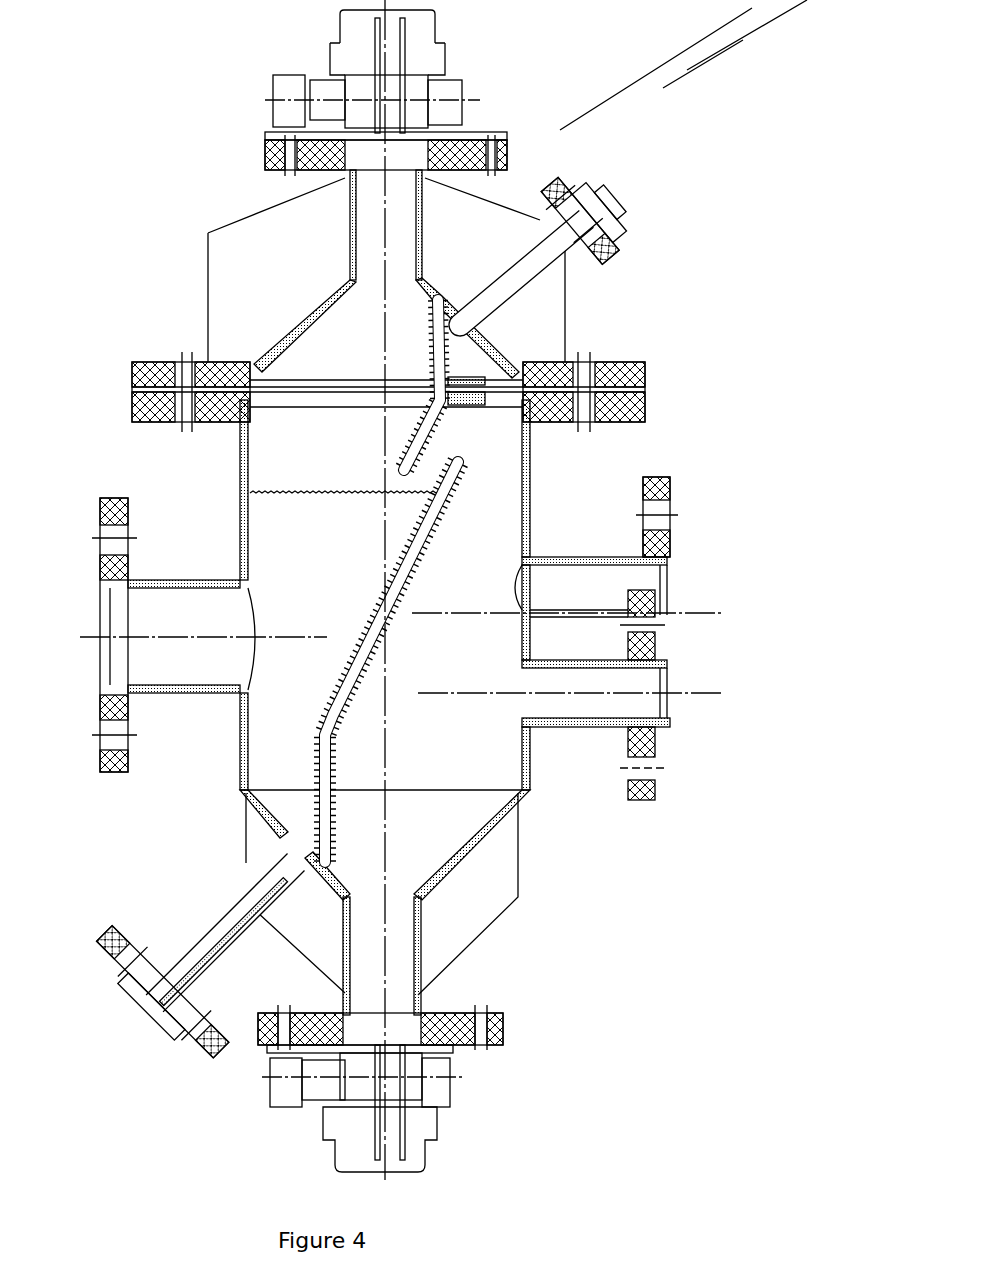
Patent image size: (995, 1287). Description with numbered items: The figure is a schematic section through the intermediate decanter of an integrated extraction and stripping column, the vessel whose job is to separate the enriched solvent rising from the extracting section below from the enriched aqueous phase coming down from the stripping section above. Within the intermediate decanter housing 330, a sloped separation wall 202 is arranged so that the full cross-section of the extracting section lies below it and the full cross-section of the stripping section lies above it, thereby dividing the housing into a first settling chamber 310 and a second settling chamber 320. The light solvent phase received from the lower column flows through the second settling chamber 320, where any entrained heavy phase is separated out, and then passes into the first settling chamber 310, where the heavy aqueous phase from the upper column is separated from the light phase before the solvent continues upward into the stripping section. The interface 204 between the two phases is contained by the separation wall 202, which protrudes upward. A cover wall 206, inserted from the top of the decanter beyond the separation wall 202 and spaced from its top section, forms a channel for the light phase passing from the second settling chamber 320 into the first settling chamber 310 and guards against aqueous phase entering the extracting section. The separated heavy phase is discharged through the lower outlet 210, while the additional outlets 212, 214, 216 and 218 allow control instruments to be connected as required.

The separation wall 202 is at (210, 852).
The interface 204 is at (228, 556).
The cover wall 206 is at (588, 506).
The lower outlet 210 is at (72, 1052).
The outlet 212 is at (58, 578).
The outlet 214 is at (686, 456).
The outlet 216 is at (562, 250).
The outlet 218 is at (550, 723).
The first settling chamber 310 is at (120, 443).
The second settling chamber 320 is at (430, 727).
The intermediate decanter housing 330 is at (536, 724).